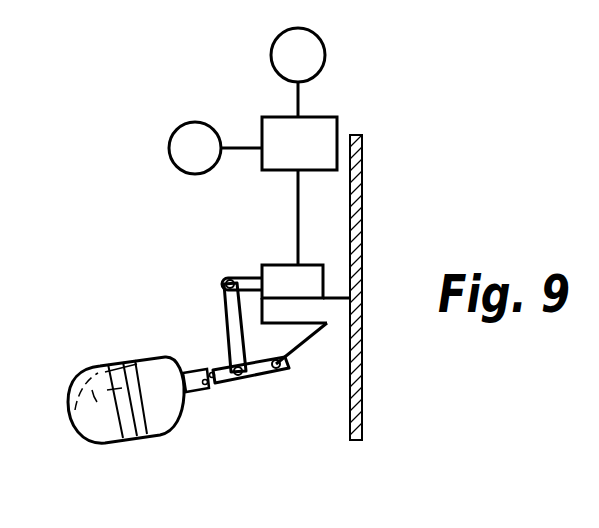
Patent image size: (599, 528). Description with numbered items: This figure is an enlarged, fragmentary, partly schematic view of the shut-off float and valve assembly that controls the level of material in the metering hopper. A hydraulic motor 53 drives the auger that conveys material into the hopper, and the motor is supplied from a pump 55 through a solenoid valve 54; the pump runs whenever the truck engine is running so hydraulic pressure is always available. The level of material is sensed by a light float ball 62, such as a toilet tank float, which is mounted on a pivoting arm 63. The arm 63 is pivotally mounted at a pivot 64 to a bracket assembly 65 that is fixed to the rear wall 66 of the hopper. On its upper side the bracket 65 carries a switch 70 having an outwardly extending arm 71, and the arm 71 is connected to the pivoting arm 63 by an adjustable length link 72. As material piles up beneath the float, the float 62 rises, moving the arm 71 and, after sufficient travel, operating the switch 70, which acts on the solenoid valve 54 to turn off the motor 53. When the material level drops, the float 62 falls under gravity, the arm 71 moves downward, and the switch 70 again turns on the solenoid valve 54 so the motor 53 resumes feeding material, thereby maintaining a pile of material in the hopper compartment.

The hydraulic motor 53 is at (322, 42).
The solenoid valve 54 is at (323, 117).
The pump 55 is at (198, 122).
The float ball 62 is at (162, 405).
The pivoting arm 63 is at (222, 385).
The pivot 64 is at (276, 370).
The bracket assembly 65 is at (298, 312).
The rear wall 66 is at (350, 232).
The switch 70 is at (273, 265).
The switch arm 71 is at (243, 278).
The adjustable length link 72 is at (232, 310).